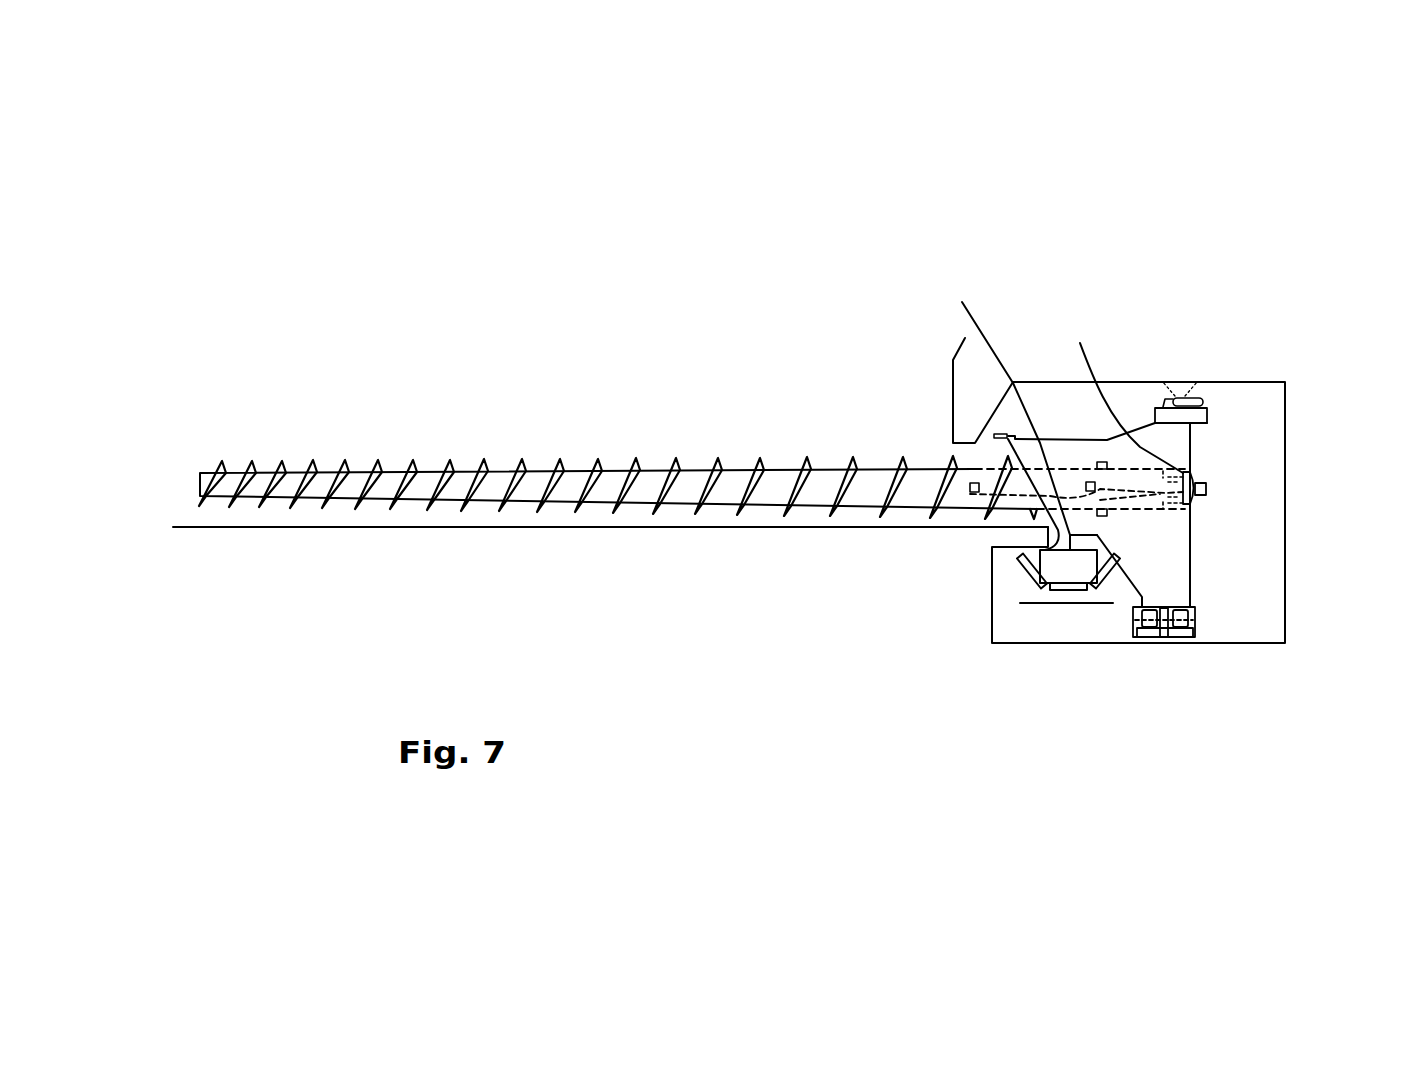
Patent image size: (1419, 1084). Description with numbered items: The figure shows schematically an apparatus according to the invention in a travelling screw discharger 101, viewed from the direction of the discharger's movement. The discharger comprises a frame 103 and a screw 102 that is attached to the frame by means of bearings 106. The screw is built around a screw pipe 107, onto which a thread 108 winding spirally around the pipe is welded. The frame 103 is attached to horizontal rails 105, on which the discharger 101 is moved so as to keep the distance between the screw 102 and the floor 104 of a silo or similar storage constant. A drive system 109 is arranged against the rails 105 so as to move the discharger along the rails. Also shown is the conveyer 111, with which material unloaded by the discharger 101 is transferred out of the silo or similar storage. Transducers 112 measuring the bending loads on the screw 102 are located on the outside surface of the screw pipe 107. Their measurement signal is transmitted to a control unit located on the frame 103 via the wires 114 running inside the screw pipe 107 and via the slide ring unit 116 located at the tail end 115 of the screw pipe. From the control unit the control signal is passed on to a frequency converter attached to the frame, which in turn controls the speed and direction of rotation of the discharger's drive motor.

The travelling screw discharger 101 is at (1123, 280).
The screw 102 is at (692, 438).
The frame 103 is at (1173, 578).
The floor 104 is at (190, 526).
The horizontal rails 105 is at (1176, 404).
The bearings 106 is at (1090, 484).
The screw pipe 107 is at (538, 480).
The thread 108 is at (597, 465).
The drive system 109 is at (1158, 375).
The conveyer 111 is at (1033, 575).
The transducers 112 is at (974, 483).
The wires 114 is at (1128, 494).
The tail end 115 is at (1205, 473).
The slide ring unit 116 is at (1208, 489).